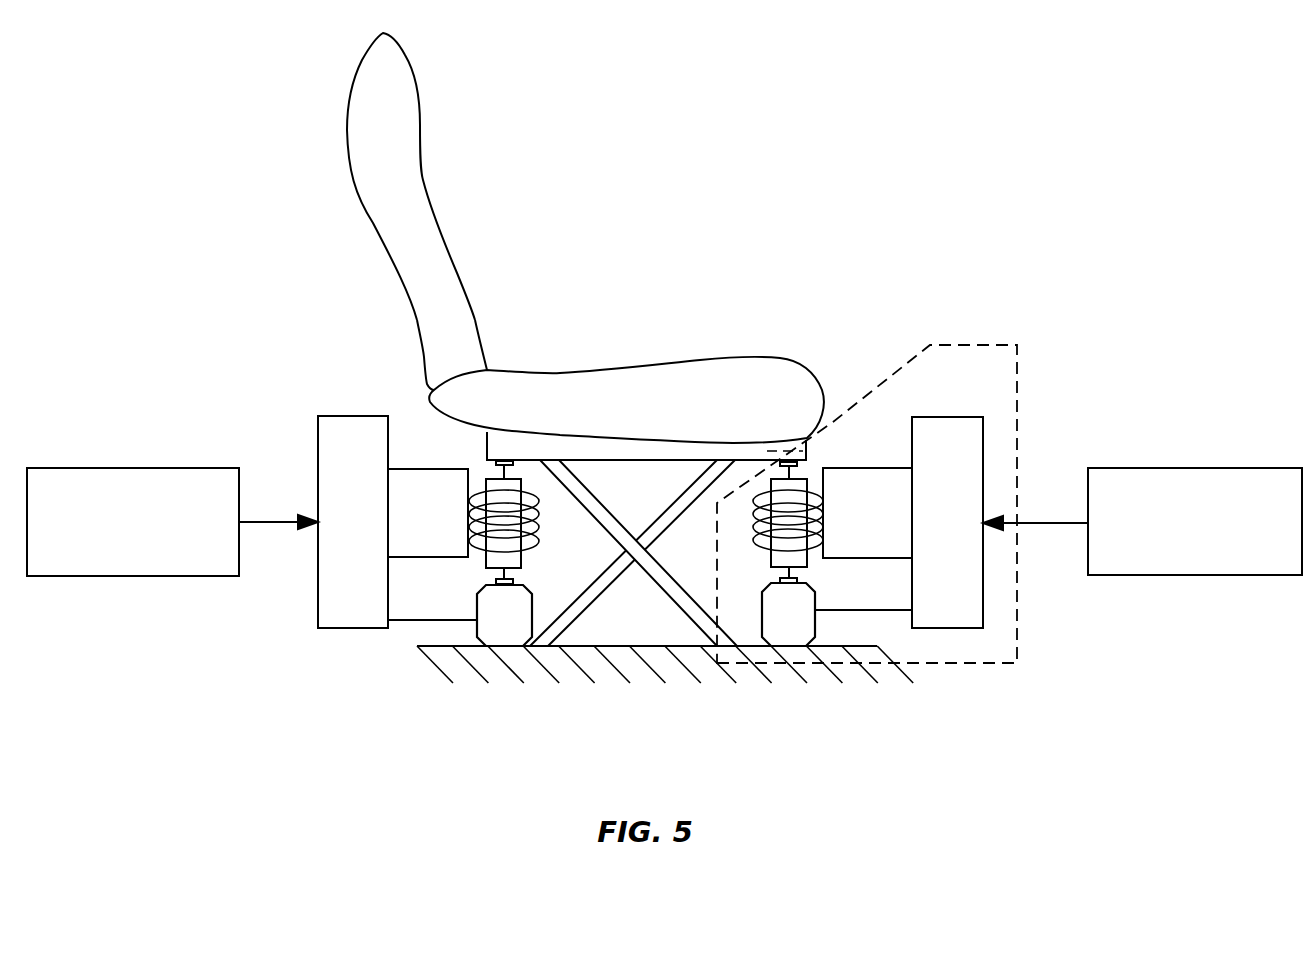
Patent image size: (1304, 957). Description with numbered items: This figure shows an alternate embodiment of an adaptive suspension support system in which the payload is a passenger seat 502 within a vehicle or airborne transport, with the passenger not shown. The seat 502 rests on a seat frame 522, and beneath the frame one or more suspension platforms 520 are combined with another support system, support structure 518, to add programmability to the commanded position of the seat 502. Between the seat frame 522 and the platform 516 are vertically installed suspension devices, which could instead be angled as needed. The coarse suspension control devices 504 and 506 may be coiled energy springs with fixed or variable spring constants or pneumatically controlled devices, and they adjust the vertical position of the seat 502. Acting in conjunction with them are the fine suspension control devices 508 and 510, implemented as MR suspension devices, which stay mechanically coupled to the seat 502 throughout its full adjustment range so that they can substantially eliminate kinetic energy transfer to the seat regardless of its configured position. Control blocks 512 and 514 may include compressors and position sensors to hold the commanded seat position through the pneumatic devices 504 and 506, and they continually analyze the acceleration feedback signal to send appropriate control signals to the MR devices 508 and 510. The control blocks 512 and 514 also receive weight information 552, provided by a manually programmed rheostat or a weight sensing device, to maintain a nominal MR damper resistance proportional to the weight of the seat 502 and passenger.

The passenger seat 502 is at (763, 380).
The coarse suspension control device 504 is at (483, 590).
The coarse suspension control device 506 is at (810, 588).
The fine suspension control device 508 is at (490, 475).
The fine suspension control device 510 is at (803, 477).
The control block 512 is at (353, 416).
The control block 514 is at (927, 417).
The platform 516 is at (832, 645).
The support structure 518 is at (603, 520).
The suspension platform 520 is at (973, 345).
The seat frame 522 is at (665, 455).
The weight information 552 is at (187, 468).